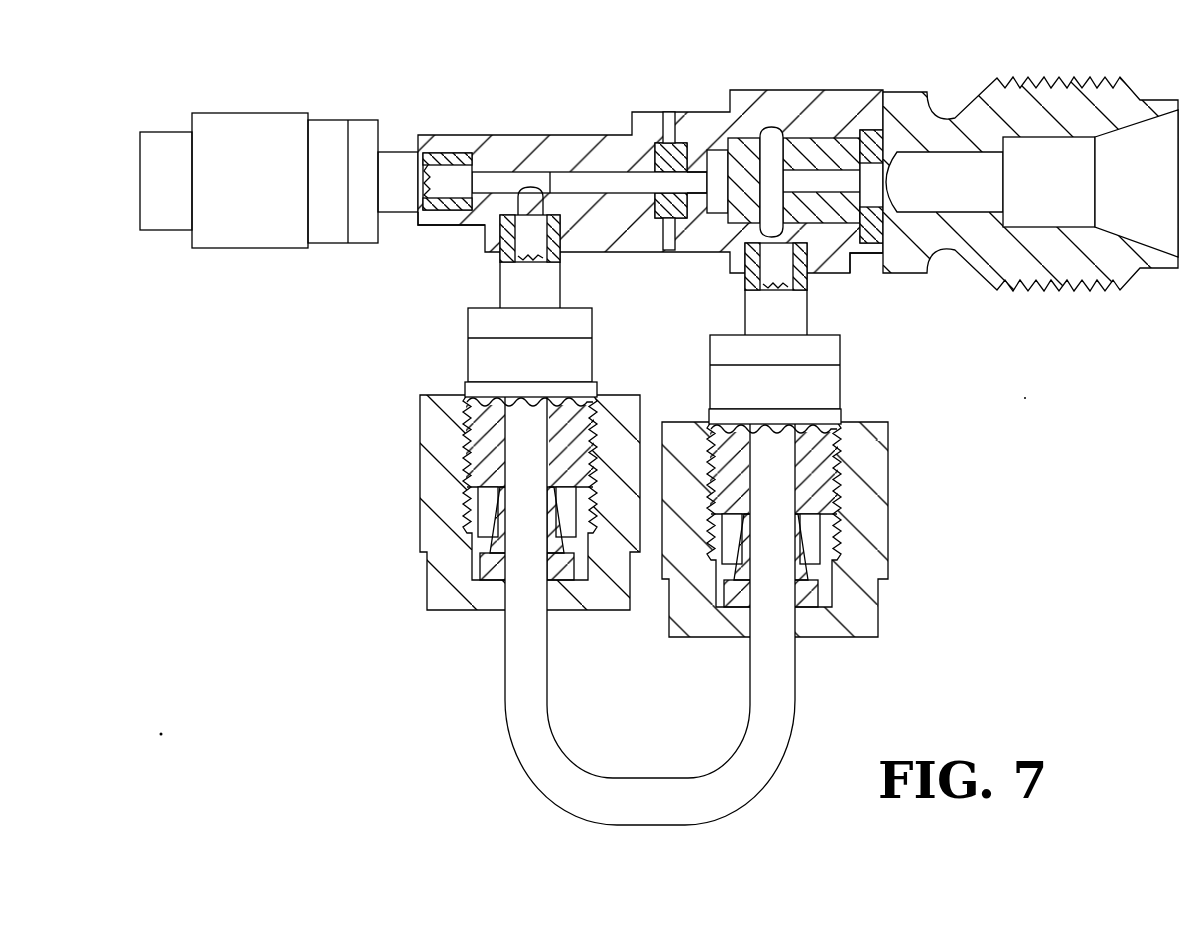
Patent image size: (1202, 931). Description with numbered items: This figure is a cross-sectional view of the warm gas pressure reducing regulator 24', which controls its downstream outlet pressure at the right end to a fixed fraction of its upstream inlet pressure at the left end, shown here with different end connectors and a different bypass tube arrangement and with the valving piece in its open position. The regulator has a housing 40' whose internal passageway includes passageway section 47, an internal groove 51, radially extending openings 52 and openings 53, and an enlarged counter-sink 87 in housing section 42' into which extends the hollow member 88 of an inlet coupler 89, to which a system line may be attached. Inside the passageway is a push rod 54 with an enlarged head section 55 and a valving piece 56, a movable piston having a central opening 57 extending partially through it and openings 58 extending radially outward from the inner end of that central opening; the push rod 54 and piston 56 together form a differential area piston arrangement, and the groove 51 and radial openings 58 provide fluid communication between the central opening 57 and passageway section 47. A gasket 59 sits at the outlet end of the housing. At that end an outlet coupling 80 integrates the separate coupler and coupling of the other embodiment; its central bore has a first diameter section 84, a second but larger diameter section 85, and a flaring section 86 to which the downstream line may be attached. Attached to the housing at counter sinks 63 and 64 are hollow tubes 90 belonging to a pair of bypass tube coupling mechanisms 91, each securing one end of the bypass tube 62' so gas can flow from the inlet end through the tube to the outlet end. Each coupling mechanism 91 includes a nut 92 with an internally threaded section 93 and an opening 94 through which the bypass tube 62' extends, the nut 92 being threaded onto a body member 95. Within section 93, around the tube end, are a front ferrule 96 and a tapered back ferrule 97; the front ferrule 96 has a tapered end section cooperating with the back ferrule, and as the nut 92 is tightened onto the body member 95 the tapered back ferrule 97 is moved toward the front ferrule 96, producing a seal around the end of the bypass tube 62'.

The pressure reducing regulator 24' is at (477, 30).
The housing 40' is at (672, 30).
The housing section 42' is at (442, 123).
The passageway section 47 is at (500, 180).
The internal groove 51 is at (770, 128).
The openings 52 is at (668, 247).
The openings 53 is at (845, 266).
The push rod 54 is at (612, 180).
The enlarged head section 55 is at (718, 158).
The valving piece 56 is at (800, 136).
The central opening 57 is at (815, 180).
The openings 58 is at (758, 193).
The gasket 59 is at (905, 130).
The bypass tube 62' is at (603, 611).
The counter sink 63 is at (497, 228).
The counter sink 64 is at (828, 250).
The outlet coupling 80 is at (1078, 78).
The first diameter section 84 is at (937, 199).
The second diameter section 85 is at (1030, 199).
The flaring section 86 is at (1123, 199).
The counter-sink 87 is at (430, 228).
The hollow member 88 is at (398, 165).
The inlet coupler 89 is at (237, 233).
The tubes 90 is at (515, 283).
The bypass tube coupling mechanisms 91 is at (370, 525).
The nut 92 is at (420, 598).
The internally threaded section 93 is at (462, 492).
The opening 94 is at (492, 605).
The body member 95 is at (838, 392).
The front ferrule 96 is at (888, 458).
The tapered back ferrule 97 is at (877, 590).